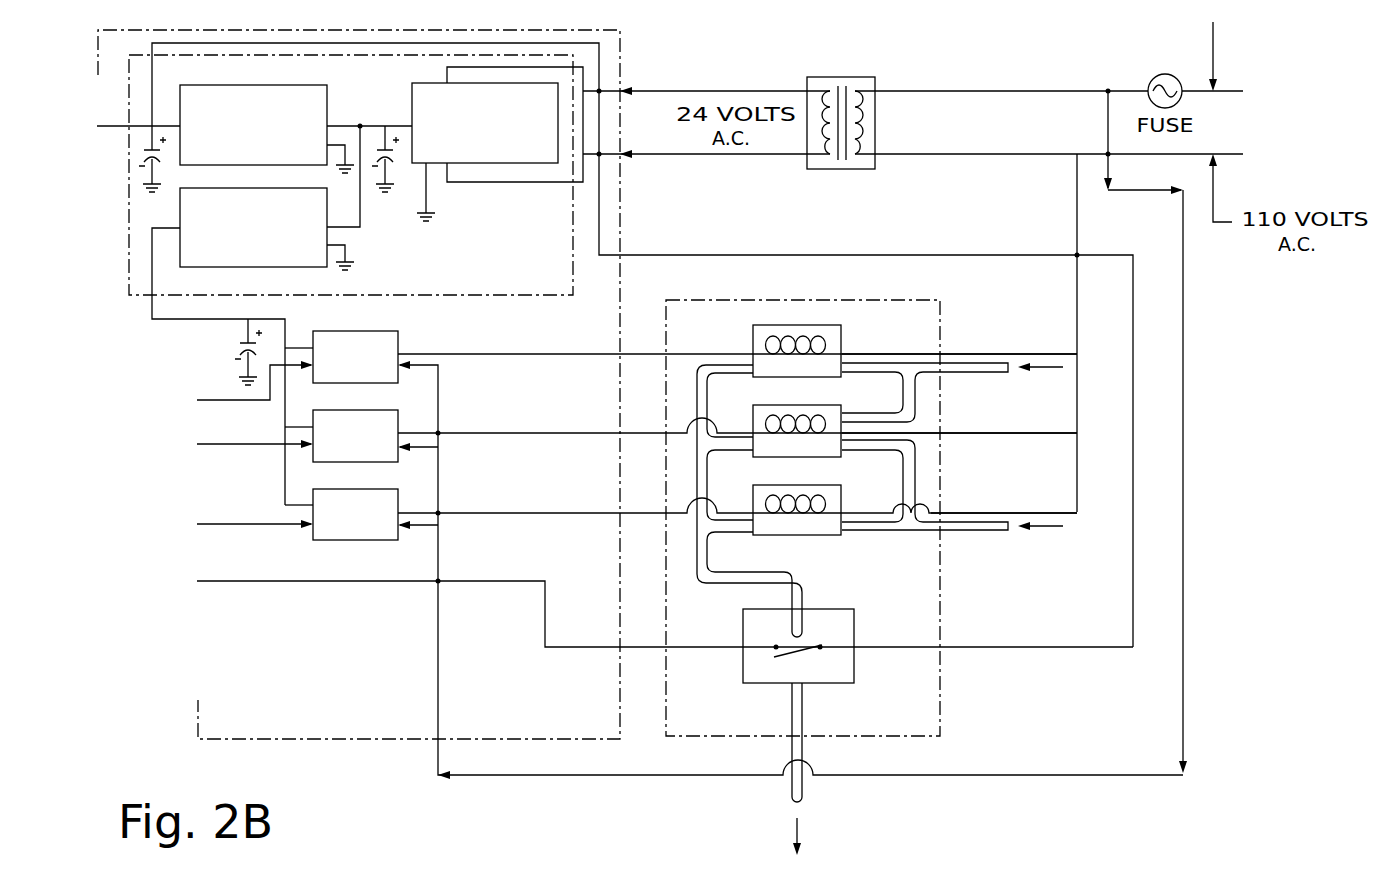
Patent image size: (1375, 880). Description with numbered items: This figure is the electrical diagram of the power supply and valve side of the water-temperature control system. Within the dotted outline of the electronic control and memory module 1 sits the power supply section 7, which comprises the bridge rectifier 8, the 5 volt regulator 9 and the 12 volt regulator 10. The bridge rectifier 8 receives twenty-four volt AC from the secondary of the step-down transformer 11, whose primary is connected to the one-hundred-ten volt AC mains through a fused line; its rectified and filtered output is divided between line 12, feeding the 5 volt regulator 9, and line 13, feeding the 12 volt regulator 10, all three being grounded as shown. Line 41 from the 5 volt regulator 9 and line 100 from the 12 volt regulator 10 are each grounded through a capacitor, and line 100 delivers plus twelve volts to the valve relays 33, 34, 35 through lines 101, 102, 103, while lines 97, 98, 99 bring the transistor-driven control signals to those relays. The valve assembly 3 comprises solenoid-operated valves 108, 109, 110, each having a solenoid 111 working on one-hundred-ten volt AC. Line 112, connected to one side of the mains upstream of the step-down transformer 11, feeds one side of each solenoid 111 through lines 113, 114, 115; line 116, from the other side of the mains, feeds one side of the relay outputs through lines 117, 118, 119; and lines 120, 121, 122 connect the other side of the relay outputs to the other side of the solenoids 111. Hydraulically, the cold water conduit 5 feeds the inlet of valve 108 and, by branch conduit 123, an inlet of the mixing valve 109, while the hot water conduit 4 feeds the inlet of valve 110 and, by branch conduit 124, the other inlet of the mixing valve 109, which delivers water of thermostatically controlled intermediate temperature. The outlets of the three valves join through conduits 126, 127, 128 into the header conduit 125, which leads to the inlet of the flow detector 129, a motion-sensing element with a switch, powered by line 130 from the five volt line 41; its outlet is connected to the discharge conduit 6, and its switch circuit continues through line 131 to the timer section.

The electronic control and memory module 1 is at (622, 62).
The valve assembly 3 is at (945, 685).
The hot water conduit 4 is at (958, 530).
The cold water conduit 5 is at (948, 372).
The discharge conduit 6 is at (808, 790).
The power supply section 7 is at (480, 296).
The bridge rectifier 8 is at (412, 112).
The 5 volt regulator 9 is at (297, 85).
The 12 volt regulator 10 is at (180, 217).
The step-down transformer 11 is at (840, 77).
The line 12 is at (341, 125).
The line 13 is at (362, 213).
The valve relay 33 is at (385, 331).
The valve relay 34 is at (400, 422).
The valve relay 35 is at (340, 540).
The line 41 is at (137, 130).
The line 97 is at (220, 400).
The line 98 is at (220, 444).
The line 99 is at (225, 524).
The line 100 is at (152, 303).
The line 101 is at (296, 348).
The line 102 is at (293, 427).
The line 103 is at (293, 505).
The solenoid-operated valve 108 is at (828, 325).
The solenoid-operated mixing valve 109 is at (818, 405).
The solenoid-operated valve 110 is at (818, 485).
The solenoid 111 is at (770, 338).
The line 112 is at (1076, 190).
The line 113 is at (953, 353).
The line 114 is at (995, 432).
The line 115 is at (965, 512).
The line 116 is at (1185, 358).
The line 117 is at (420, 365).
The line 118 is at (420, 447).
The line 119 is at (428, 525).
The line 120 is at (522, 354).
The line 121 is at (515, 433).
The line 122 is at (518, 513).
The branch conduit 123 is at (912, 398).
The branch conduit 124 is at (917, 482).
The header conduit 125 is at (705, 488).
The conduit 126 is at (740, 363).
The conduit 127 is at (705, 450).
The conduit 128 is at (723, 532).
The flow detector 129 is at (838, 683).
The line 130 is at (267, 45).
The line 131 is at (232, 581).